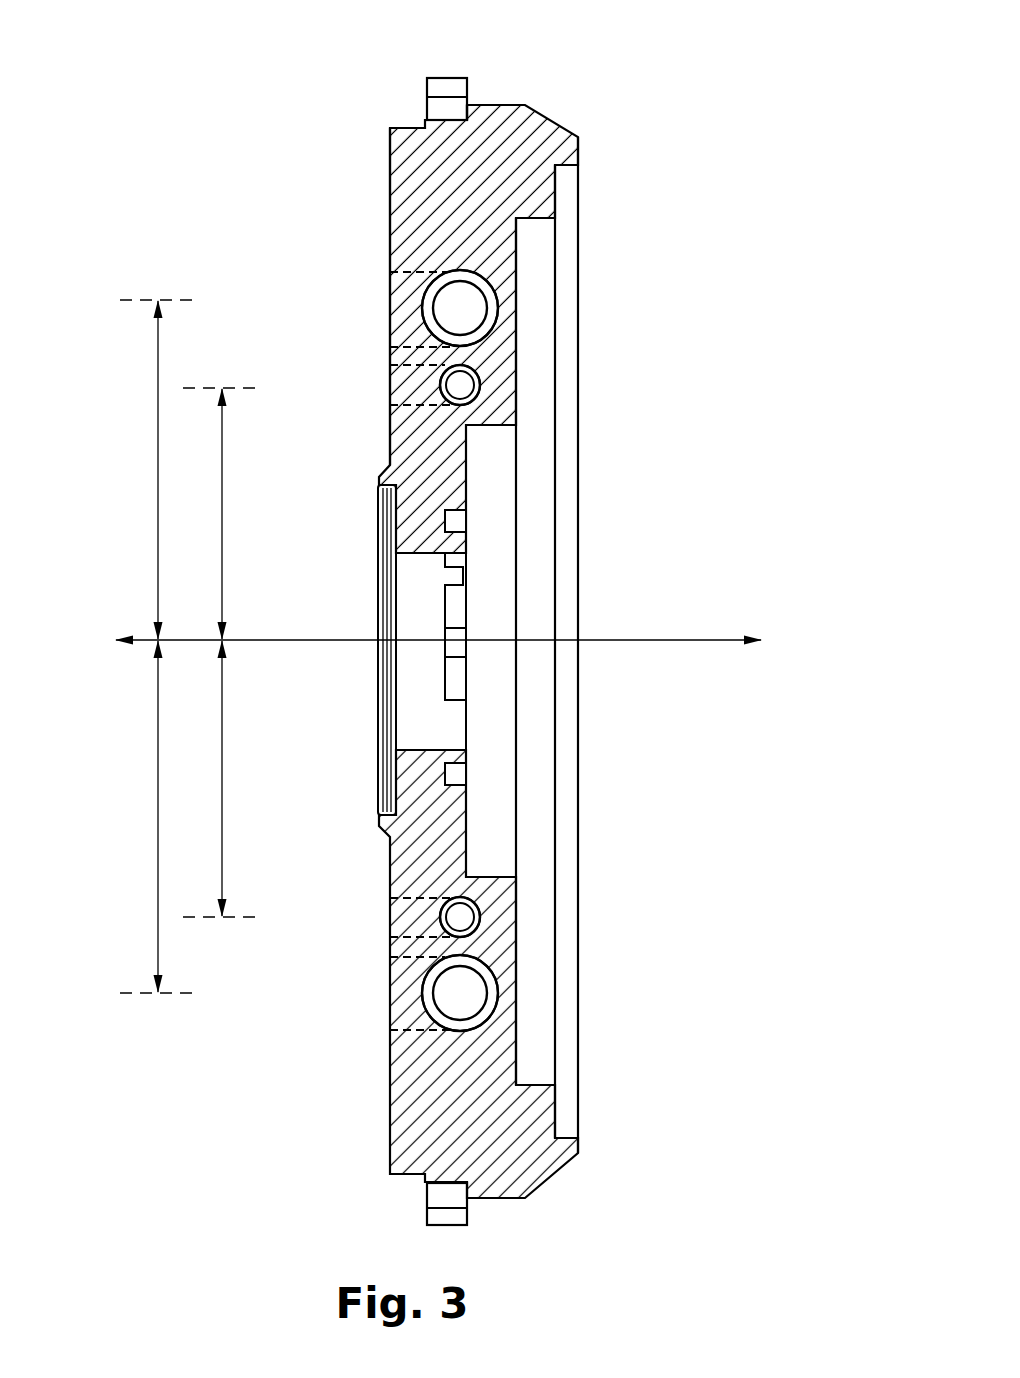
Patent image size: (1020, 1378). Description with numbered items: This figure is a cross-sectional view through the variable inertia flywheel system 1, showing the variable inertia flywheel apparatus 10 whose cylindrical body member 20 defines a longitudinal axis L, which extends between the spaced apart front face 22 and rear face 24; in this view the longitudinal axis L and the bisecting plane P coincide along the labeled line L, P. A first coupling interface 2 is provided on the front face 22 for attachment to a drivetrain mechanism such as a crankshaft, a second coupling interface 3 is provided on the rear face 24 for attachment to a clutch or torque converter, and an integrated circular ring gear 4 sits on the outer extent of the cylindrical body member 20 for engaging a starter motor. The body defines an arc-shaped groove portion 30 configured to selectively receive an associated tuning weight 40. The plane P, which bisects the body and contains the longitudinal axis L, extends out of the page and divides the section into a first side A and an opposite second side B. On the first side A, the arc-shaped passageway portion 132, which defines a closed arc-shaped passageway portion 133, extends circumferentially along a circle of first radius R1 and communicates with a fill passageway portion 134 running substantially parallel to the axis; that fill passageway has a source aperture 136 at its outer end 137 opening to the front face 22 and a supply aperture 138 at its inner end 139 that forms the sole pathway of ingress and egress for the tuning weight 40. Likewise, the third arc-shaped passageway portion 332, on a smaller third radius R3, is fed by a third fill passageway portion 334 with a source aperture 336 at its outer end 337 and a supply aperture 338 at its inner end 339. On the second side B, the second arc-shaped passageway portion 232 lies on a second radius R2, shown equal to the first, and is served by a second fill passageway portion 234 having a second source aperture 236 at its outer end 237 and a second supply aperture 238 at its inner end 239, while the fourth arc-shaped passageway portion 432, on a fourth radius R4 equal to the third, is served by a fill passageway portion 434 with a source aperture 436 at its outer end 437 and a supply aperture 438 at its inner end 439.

The variable inertia flywheel system 1 is at (671, 64).
The first coupling interface 2 is at (392, 756).
The second coupling interface 3 is at (556, 1109).
The integrated circular ring gear 4 is at (437, 77).
The variable inertia flywheel apparatus 10 is at (561, 134).
The cylindrical body member 20 is at (523, 126).
The front face 22 is at (390, 178).
The rear face 24 is at (580, 158).
The arc-shaped groove portion 30 is at (481, 311).
The associated tuning weight 40 is at (497, 317).
The arc-shaped passageway portion 132 is at (476, 292).
The closed arc-shaped passageway portion 133 is at (478, 275).
The fill passageway portion 134 is at (392, 301).
The source aperture 136 is at (387, 274).
The outer end 137 is at (388, 265).
The supply aperture 138 is at (419, 332).
The inner end 139 is at (450, 270).
The second arc-shaped passageway portion 232 is at (498, 983).
The second fill passageway portion 234 is at (406, 992).
The second source aperture 236 is at (387, 963).
The outer end 237 is at (390, 1033).
The second supply aperture 238 is at (432, 1027).
The inner end 239 is at (448, 1035).
The third arc-shaped passageway portion 332 is at (480, 372).
The third fill passageway portion 334 is at (387, 372).
The source aperture 336 is at (406, 386).
The outer end 337 is at (388, 404).
The supply aperture 338 is at (441, 398).
The inner end 339 is at (455, 403).
The fourth arc-shaped passageway portion 432 is at (483, 913).
The fill passageway portion 434 is at (417, 921).
The source aperture 436 is at (381, 899).
The outer end 437 is at (387, 902).
The supply aperture 438 is at (432, 933).
The inner end 439 is at (445, 898).
The first radius R1 is at (158, 467).
The second radius R2 is at (158, 790).
The third radius R3 is at (222, 512).
The fourth radius R4 is at (222, 743).
The longitudinal axis / plane L, P is at (150, 638).
The first side A is at (695, 478).
The second side B is at (695, 694).